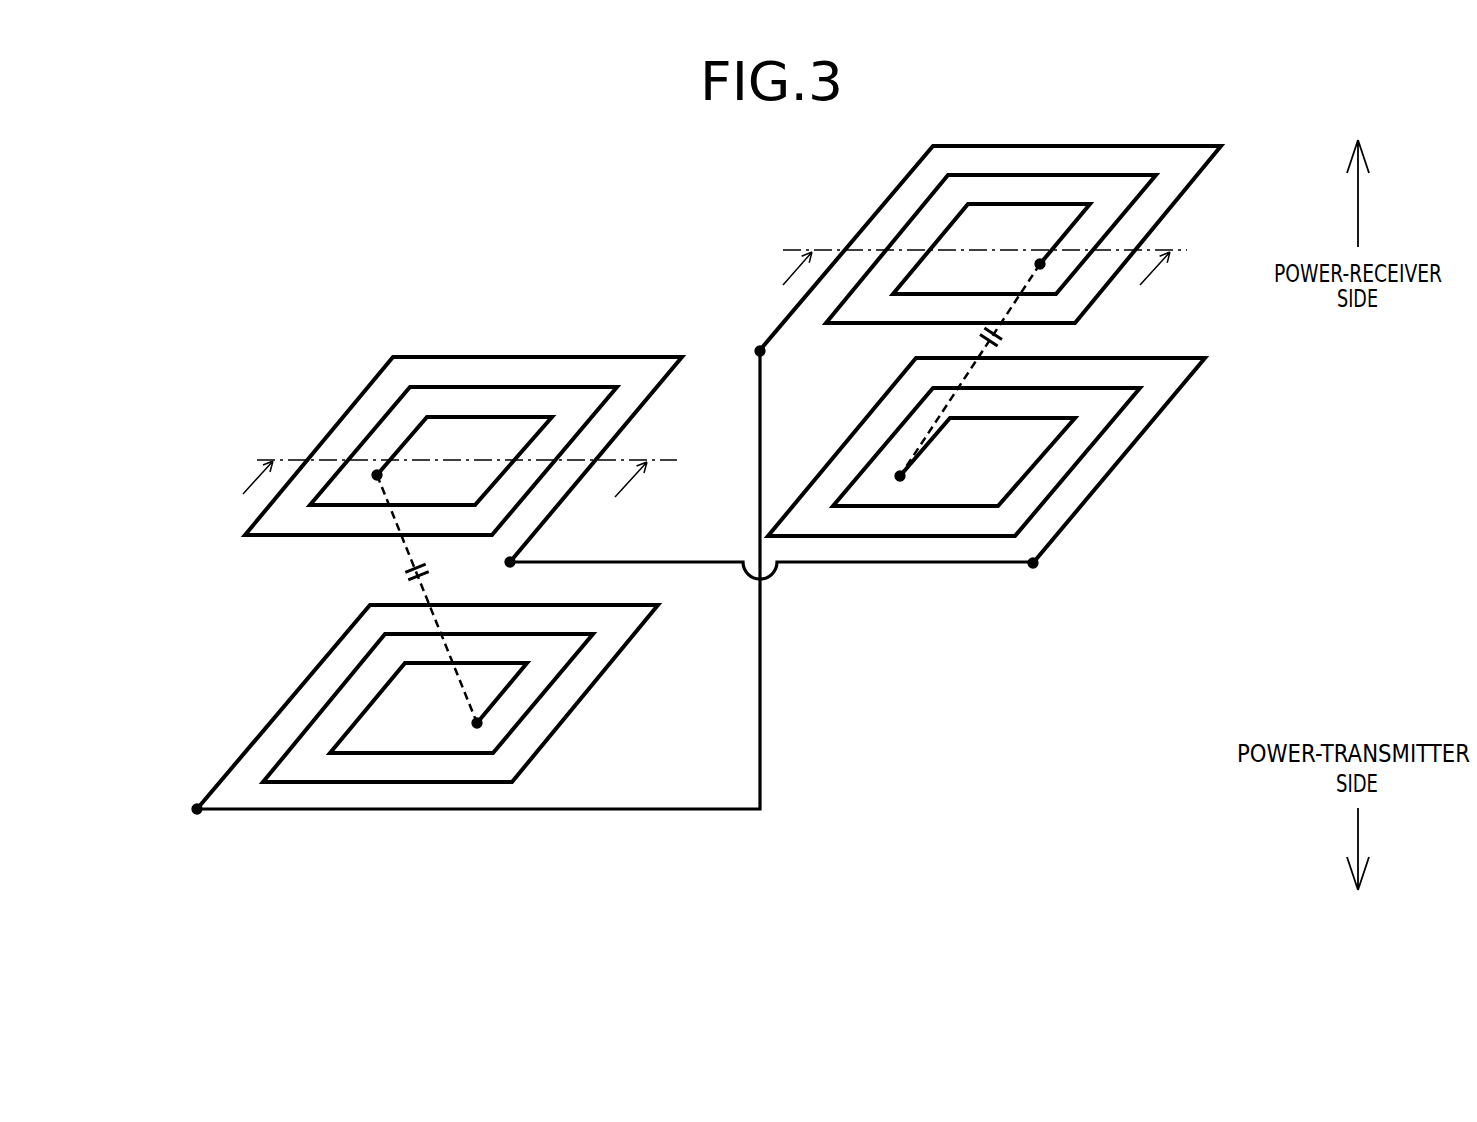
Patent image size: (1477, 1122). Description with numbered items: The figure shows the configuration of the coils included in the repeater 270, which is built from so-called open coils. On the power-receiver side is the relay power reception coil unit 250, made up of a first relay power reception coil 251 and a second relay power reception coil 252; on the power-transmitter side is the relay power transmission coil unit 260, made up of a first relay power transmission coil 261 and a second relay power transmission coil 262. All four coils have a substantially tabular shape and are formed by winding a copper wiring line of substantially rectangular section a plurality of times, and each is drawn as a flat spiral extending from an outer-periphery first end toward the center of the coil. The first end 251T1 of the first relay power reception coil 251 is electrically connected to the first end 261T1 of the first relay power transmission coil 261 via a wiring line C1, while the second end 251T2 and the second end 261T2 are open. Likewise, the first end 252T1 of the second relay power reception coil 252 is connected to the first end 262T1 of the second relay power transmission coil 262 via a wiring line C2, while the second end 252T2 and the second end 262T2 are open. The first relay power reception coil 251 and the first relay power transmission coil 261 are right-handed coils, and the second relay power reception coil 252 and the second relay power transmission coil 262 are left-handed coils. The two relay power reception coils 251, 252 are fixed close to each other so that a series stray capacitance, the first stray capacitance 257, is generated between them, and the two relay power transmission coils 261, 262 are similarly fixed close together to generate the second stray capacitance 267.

The repeater 270 is at (415, 275).
The relay power reception coil unit 250 is at (173, 405).
The first relay power reception coil 251 is at (318, 660).
The second relay power reception coil 252 is at (332, 427).
The first stray capacitance 257 is at (410, 570).
The first end of the first relay power reception coil 251T1 is at (197, 809).
The second end of the first relay power reception coil 251T2 is at (477, 723).
The first end of the second relay power reception coil 252T1 is at (510, 564).
The second end of the second relay power reception coil 252T2 is at (377, 472).
The relay power transmission coil unit 260 is at (1248, 210).
The first relay power transmission coil 261 is at (1175, 218).
The second relay power transmission coil 262 is at (1150, 430).
The second stray capacitance 267 is at (998, 334).
The first end of the first relay power transmission coil 261T1 is at (760, 352).
The second end of the first relay power transmission coil 261T2 is at (1038, 262).
The first end of the second relay power transmission coil 262T1 is at (1033, 565).
The second end of the second relay power transmission coil 262T2 is at (900, 476).
The wiring line C1 is at (598, 809).
The wiring line C2 is at (655, 562).